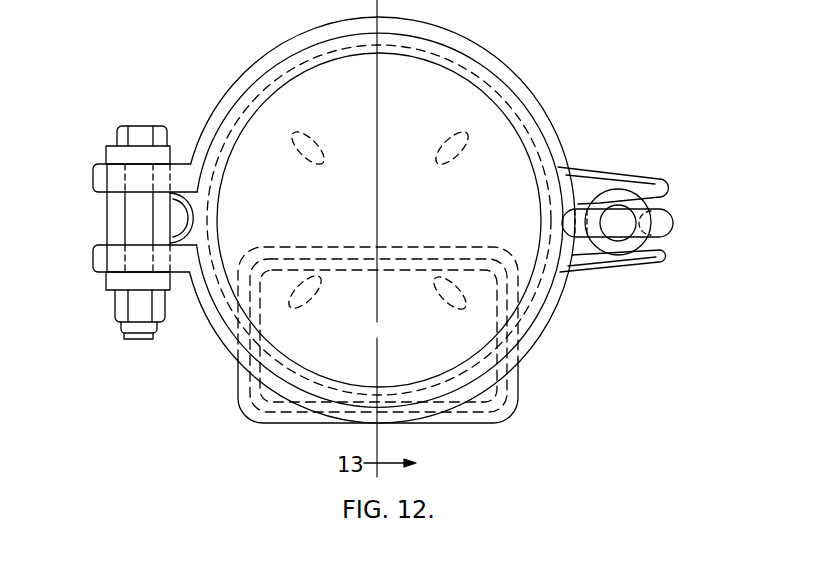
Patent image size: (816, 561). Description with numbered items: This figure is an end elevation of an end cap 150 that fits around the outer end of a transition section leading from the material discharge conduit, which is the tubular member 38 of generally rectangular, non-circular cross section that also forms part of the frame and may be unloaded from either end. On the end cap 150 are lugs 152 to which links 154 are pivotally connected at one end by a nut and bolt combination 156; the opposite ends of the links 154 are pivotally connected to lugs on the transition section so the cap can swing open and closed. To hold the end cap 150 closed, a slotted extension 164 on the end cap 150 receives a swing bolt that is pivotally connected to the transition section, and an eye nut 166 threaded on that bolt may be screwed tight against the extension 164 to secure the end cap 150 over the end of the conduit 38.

The end cap 150 is at (473, 98).
The lugs 152 is at (94, 173).
The links 154 is at (106, 153).
The nut and bolt combination 156 is at (142, 126).
The slotted extension 164 is at (576, 186).
The eye nut 166 is at (678, 226).
The tubular member 38 is at (280, 426).